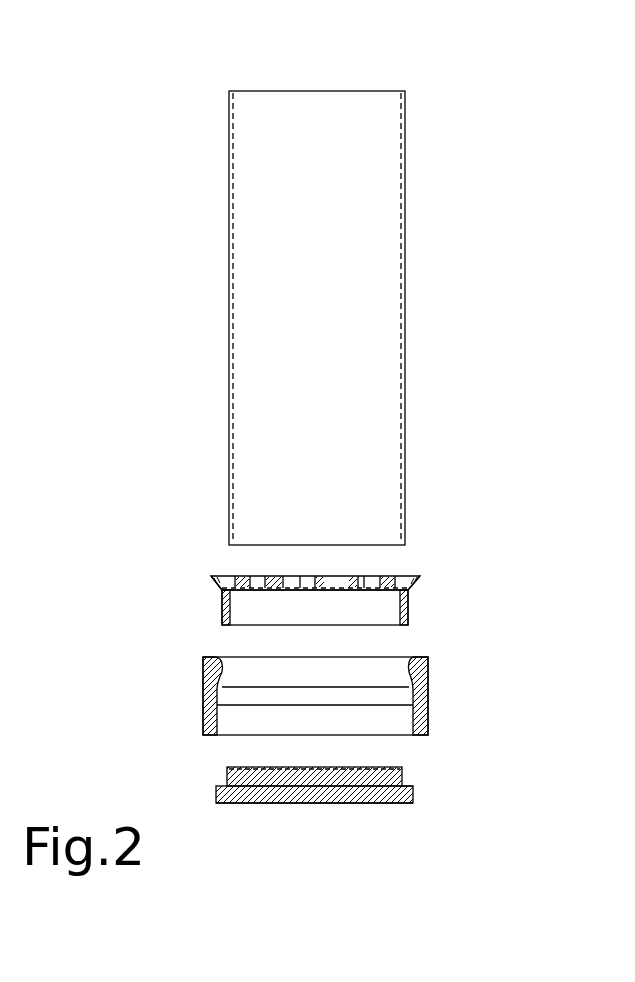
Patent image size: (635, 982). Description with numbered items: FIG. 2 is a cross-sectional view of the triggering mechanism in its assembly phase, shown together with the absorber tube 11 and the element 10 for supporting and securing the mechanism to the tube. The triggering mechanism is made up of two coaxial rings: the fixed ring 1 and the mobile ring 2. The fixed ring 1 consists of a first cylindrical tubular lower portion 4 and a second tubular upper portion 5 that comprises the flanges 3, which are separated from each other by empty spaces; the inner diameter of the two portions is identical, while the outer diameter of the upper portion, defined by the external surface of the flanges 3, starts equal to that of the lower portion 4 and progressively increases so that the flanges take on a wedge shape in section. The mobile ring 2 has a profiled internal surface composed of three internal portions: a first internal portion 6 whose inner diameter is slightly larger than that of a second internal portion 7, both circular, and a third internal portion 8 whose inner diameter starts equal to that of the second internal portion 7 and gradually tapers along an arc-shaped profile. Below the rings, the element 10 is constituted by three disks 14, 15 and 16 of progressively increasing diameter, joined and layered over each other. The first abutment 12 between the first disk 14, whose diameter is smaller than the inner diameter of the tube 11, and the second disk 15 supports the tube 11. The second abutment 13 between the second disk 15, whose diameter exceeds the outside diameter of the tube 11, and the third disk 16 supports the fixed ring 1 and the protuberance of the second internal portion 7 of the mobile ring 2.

The fixed ring 1 is at (354, 586).
The mobile ring 2 is at (342, 710).
The flanges 3 is at (335, 576).
The first cylindrical tubular lower portion 4 is at (222, 613).
The second tubular upper portion 5 is at (216, 581).
The first internal portion 6 is at (221, 719).
The second internal portion 7 is at (224, 690).
The third internal portion 8 is at (222, 657).
The element for supporting and securing the triggering mechanism 10 is at (358, 796).
The absorber tube 11 is at (405, 316).
The first abutment 12 is at (404, 763).
The second abutment 13 is at (411, 784).
The first disk 14 is at (229, 767).
The second disk 15 is at (226, 786).
The third disk 16 is at (216, 801).